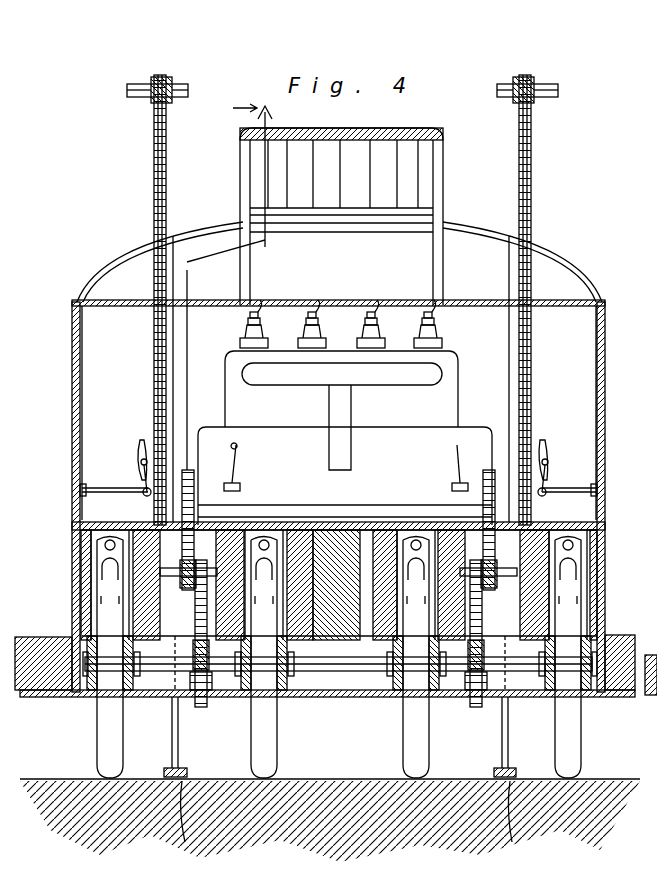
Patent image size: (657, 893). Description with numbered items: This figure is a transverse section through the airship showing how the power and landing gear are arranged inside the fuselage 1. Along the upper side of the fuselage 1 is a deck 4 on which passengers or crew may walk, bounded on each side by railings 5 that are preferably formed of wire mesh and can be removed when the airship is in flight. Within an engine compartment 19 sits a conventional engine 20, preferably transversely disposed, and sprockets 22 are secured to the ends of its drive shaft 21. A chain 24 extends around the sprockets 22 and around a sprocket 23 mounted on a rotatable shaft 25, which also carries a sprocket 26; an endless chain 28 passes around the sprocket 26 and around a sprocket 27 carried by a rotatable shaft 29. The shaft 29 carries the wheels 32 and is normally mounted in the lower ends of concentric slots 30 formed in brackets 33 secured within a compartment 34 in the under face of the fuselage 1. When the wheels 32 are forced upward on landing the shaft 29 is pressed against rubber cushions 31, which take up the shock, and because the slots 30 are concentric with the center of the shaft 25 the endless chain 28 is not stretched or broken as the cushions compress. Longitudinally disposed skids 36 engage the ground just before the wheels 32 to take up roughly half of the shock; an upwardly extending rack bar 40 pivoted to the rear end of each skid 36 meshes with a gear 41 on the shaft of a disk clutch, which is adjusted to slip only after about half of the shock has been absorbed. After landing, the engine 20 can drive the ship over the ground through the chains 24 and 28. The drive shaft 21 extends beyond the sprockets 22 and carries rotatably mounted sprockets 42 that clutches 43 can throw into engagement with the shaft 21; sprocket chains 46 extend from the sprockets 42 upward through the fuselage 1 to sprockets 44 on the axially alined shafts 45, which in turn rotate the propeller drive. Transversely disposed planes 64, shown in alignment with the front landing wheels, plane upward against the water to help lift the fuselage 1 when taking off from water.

The fuselage 1 is at (78, 470).
The deck 4 is at (411, 128).
The railings 5 is at (142, 727).
The engine compartment 19 is at (82, 395).
The engine 20 is at (345, 412).
The drive shaft 21 is at (200, 492).
The sprockets 22 is at (215, 455).
The sprocket 23 is at (150, 530).
The chain 24 is at (200, 512).
The rotatable shaft 25 is at (182, 585).
The sprocket 26 is at (210, 670).
The sprocket 27 is at (201, 707).
The endless chain 28 is at (193, 650).
The rotatable shaft 29 is at (348, 672).
The concentric slots 30 is at (92, 692).
The rubber cushions 31 is at (294, 658).
The wheels 32 is at (97, 752).
The brackets 33 is at (305, 545).
The compartment 34 is at (75, 535).
The skids 36 is at (330, 821).
The rack bar 40 is at (172, 752).
The gear 41 is at (605, 610).
The sprockets 42 is at (140, 462).
The clutches 43 is at (143, 490).
The sprockets 44 is at (172, 96).
The axially alined shafts 45 is at (138, 97).
The sprocket chains 46 is at (154, 195).
The transversely disposed planes 64 is at (33, 697).